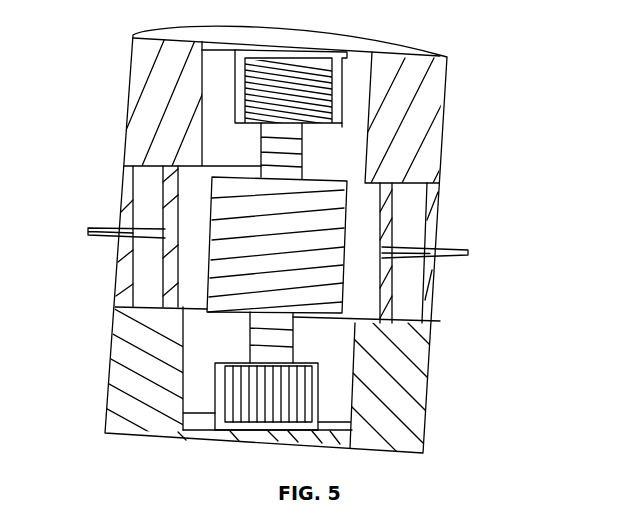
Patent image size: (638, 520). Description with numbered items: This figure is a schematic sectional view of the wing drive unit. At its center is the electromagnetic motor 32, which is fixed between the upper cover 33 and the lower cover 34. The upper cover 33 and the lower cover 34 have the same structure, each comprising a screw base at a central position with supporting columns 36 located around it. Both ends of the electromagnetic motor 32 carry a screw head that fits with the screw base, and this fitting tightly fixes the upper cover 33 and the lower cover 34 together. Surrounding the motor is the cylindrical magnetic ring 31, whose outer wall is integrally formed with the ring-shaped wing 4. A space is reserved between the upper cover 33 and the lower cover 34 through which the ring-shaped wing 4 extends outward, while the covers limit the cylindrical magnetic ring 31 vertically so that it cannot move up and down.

The ring-shaped wing 4 is at (472, 250).
The cylindrical magnetic ring 31 is at (160, 276).
The electromagnetic motor 32 is at (207, 183).
The upper cover 33 is at (445, 112).
The lower cover 34 is at (425, 400).
The supporting columns 36 is at (193, 107).